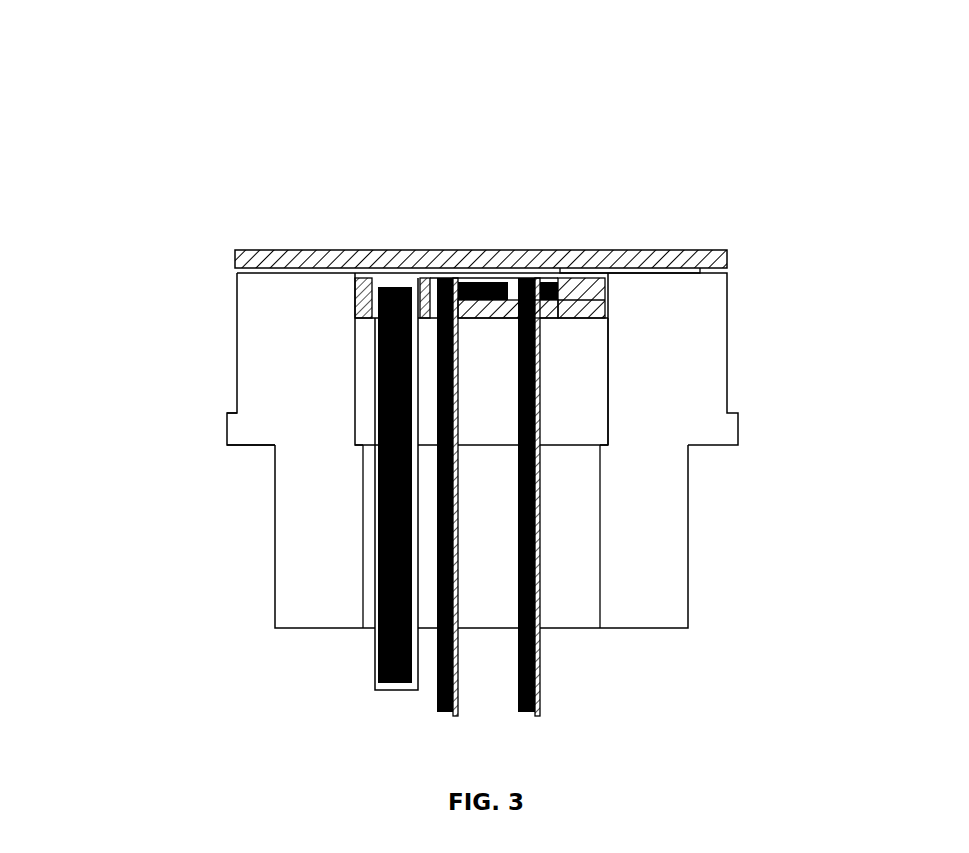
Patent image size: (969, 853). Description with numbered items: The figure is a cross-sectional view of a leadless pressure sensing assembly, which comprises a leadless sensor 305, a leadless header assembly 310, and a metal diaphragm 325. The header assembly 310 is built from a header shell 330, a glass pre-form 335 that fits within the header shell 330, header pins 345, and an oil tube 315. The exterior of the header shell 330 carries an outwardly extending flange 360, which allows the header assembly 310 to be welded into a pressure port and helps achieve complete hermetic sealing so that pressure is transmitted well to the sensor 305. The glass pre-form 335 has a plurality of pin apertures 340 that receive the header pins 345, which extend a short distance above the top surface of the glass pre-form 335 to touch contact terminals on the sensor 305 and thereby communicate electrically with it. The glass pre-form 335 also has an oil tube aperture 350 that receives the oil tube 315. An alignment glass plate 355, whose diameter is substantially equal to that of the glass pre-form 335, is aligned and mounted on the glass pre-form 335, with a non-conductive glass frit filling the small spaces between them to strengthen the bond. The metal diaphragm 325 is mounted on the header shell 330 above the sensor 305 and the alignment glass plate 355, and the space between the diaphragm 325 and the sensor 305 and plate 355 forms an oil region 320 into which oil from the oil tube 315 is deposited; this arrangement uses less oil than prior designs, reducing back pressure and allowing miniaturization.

The leadless sensor 305 is at (430, 287).
The leadless header assembly 310 is at (748, 375).
The oil tube 315 is at (380, 690).
The oil region 320 is at (280, 267).
The metal diaphragm 325 is at (670, 262).
The header shell 330 is at (272, 578).
The glass pre-form 335 is at (612, 422).
The pin apertures 340 is at (540, 448).
The header pins 345 is at (542, 690).
The oil tube aperture 350 is at (375, 402).
The alignment glass plate 355 is at (570, 285).
The flange 360 is at (232, 413).